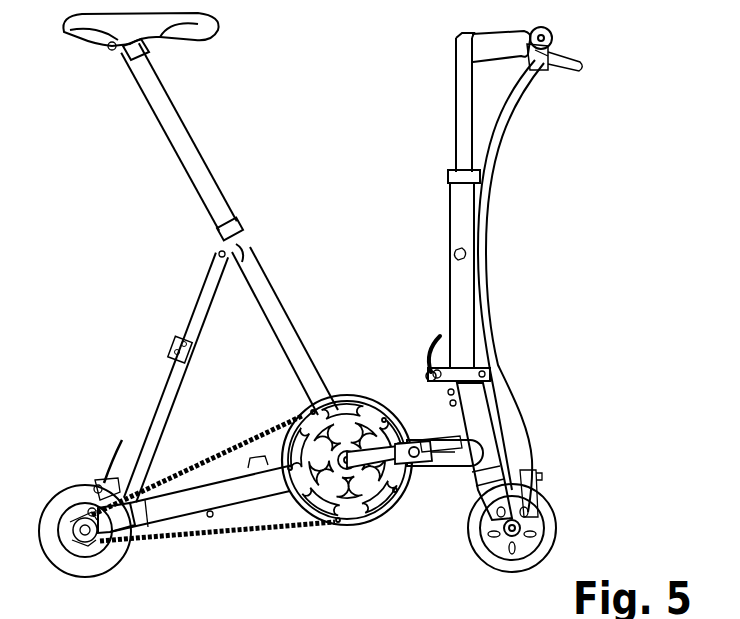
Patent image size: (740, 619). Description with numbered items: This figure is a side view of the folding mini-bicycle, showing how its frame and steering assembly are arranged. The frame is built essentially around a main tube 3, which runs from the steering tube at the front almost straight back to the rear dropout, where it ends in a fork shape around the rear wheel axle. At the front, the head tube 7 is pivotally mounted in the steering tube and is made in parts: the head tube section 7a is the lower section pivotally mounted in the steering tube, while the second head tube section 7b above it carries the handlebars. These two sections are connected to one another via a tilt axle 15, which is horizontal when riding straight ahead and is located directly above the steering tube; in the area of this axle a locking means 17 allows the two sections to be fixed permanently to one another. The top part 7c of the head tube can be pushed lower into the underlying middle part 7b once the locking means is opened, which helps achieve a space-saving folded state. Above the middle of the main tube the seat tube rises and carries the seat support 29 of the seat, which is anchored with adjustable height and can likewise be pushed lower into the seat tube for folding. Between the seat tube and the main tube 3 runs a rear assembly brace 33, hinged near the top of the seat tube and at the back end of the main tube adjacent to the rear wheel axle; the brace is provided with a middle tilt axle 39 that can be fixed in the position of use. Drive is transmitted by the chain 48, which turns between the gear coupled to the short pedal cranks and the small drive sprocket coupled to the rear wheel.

The main tube 3 is at (230, 493).
The head tube 7 is at (470, 299).
The head tube section 7a is at (470, 395).
The second head tube section 7b is at (463, 293).
The top part of the head tube 7c is at (462, 115).
The tilt axle 15 is at (485, 365).
The locking means 17 is at (417, 352).
The seat support 29 is at (167, 127).
The rear assembly brace 33 is at (162, 294).
The middle tilt axle 39 is at (160, 346).
The chain 48 is at (295, 532).